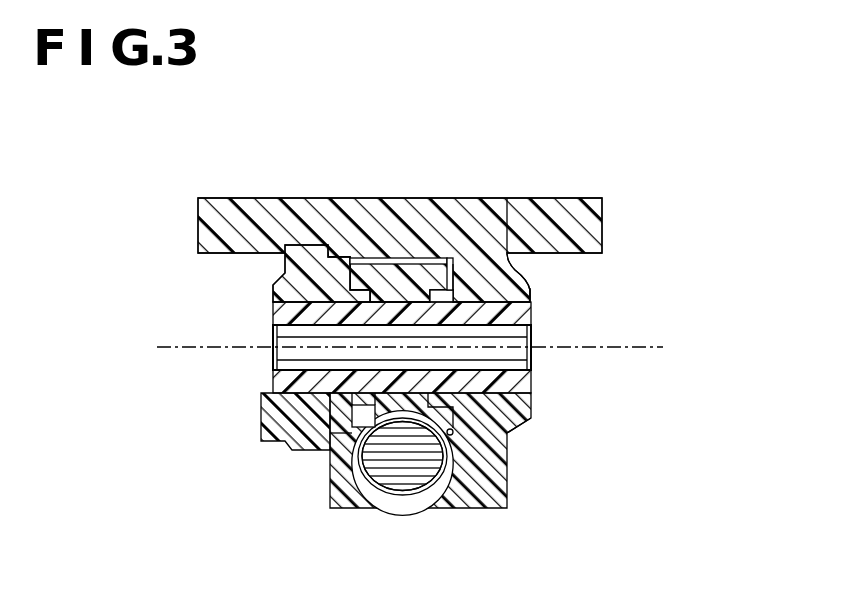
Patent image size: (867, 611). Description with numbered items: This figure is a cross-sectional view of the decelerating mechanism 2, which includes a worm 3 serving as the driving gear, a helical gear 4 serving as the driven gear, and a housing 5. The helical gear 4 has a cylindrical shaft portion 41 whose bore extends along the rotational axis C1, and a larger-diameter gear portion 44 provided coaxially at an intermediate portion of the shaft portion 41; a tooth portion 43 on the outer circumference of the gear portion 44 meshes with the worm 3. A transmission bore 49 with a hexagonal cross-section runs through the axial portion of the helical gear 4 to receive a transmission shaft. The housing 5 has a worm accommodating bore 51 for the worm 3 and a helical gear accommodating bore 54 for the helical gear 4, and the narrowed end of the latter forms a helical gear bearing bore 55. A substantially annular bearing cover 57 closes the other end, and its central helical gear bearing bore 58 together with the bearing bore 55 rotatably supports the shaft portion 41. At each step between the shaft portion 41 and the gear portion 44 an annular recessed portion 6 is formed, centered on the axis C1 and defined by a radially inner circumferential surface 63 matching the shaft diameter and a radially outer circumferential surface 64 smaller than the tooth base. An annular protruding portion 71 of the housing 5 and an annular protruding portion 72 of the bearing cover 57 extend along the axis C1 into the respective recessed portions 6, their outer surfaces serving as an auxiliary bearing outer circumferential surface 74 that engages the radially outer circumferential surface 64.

The decelerating mechanism 2 is at (350, 158).
The worm 3 is at (393, 468).
The helical gear 4 is at (273, 313).
The housing 5 is at (503, 460).
The annular recessed portion 6 is at (391, 273).
The shaft portion 41 is at (277, 378).
The tooth portion 43 is at (366, 250).
The gear portion 44 is at (405, 300).
The transmission bore 49 is at (270, 355).
The worm accommodating bore 51 is at (417, 495).
The helical gear accommodating bore 54 is at (420, 257).
The helical gear bearing bore 55 is at (532, 420).
The bearing cover 57 is at (310, 433).
The helical gear bearing bore 58 is at (257, 425).
The radially inner circumferential surface 63 is at (520, 307).
The radially outer circumferential surface 64 is at (362, 252).
The annular protruding portion 71 is at (440, 296).
The annular protruding portion 72 is at (350, 300).
The auxiliary bearing outer circumferential surface 74 is at (447, 262).
The rotational axis C1 is at (391, 350).